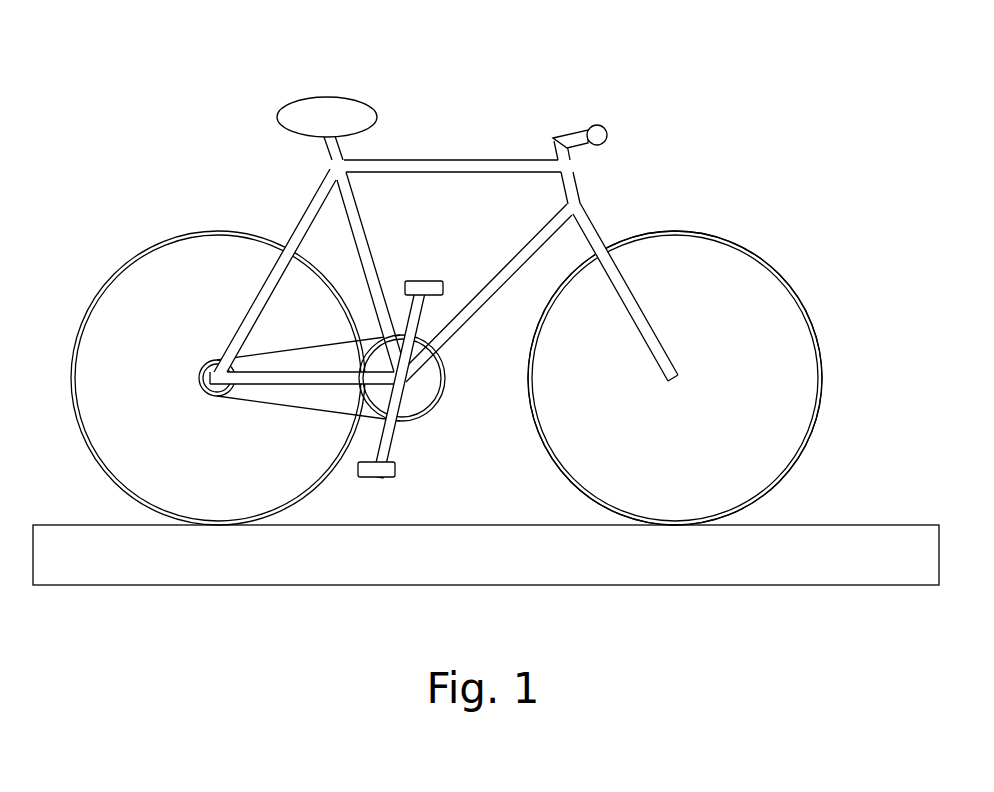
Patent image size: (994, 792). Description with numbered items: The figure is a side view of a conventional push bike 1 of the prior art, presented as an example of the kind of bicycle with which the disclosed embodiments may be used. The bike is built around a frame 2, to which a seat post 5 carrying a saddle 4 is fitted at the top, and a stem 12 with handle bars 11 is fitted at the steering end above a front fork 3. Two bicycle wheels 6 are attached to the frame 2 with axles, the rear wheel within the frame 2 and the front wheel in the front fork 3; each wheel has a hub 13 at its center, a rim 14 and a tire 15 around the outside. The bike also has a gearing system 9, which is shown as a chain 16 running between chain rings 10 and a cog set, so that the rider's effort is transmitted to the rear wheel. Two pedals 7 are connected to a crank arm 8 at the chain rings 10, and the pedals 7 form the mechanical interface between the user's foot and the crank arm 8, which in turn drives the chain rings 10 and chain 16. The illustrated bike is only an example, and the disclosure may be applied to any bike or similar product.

The push bike 1 is at (479, 297).
The frame 2 is at (460, 148).
The front fork 3 is at (600, 226).
The saddle 4 is at (320, 97).
The seat post 5 is at (322, 150).
The bicycle wheel 6 is at (791, 272).
The pedal 7 is at (388, 488).
The crank arm 8 is at (398, 442).
The gearing system 9 is at (350, 333).
The chain rings 10 is at (352, 394).
The handle bars 11 is at (606, 121).
The stem 12 is at (567, 130).
The hub 13 is at (678, 384).
The rim 14 is at (798, 337).
The tire 15 is at (805, 451).
The chain 16 is at (310, 413).